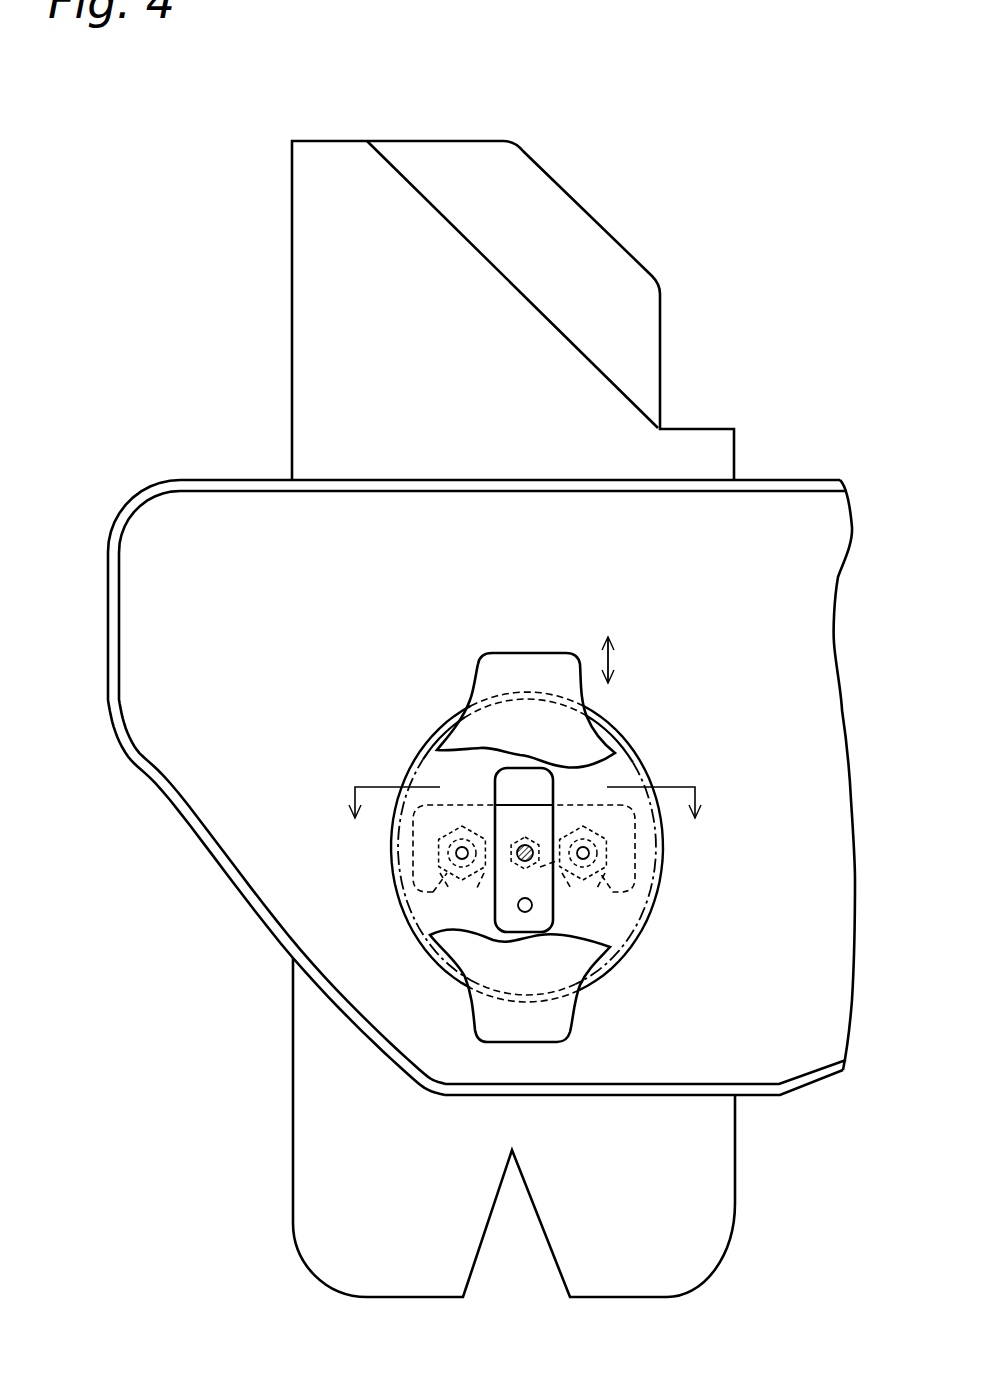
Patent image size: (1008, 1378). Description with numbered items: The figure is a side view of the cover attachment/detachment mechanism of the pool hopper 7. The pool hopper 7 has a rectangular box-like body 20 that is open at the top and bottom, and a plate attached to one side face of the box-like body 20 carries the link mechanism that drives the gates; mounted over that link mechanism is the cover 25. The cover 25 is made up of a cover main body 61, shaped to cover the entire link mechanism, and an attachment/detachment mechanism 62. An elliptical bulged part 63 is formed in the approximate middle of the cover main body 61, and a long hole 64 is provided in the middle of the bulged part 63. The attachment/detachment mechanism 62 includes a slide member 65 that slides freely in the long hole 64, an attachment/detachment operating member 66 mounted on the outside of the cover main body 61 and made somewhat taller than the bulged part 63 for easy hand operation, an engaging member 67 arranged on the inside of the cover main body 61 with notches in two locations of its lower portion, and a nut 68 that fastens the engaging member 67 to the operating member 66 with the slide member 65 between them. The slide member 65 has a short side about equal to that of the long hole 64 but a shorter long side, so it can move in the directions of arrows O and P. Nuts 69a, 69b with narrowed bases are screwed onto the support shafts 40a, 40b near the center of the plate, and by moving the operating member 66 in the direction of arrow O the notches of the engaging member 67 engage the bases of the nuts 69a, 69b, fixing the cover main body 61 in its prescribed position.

The pool hopper 7 is at (267, 333).
The cover 25 is at (228, 518).
The cover main body 61 is at (762, 1063).
The box-like body 20 is at (700, 1198).
The attachment/detachment mechanism 62 is at (400, 692).
The elliptical bulged part 63 is at (635, 955).
The attachment/detachment operating member 66 is at (538, 668).
The slide member 65 is at (510, 895).
The long hole 64 is at (500, 792).
The nut 68 is at (540, 865).
The nut 69a is at (562, 840).
The nut 69b is at (488, 840).
The engaging member 67 is at (413, 858).
The support shaft 40a is at (593, 857).
The support shaft 40b is at (440, 866).